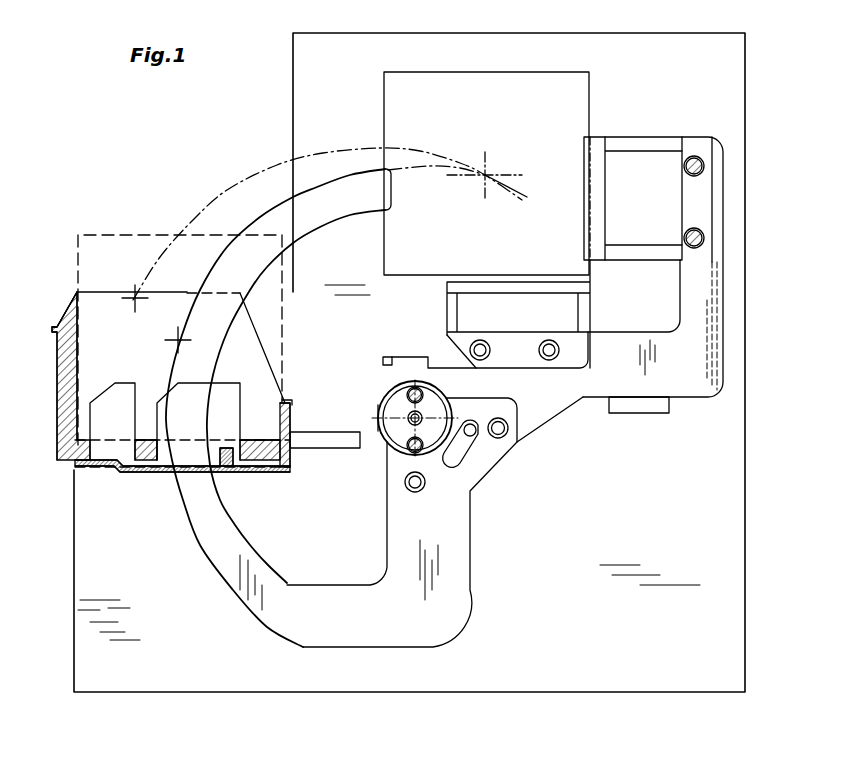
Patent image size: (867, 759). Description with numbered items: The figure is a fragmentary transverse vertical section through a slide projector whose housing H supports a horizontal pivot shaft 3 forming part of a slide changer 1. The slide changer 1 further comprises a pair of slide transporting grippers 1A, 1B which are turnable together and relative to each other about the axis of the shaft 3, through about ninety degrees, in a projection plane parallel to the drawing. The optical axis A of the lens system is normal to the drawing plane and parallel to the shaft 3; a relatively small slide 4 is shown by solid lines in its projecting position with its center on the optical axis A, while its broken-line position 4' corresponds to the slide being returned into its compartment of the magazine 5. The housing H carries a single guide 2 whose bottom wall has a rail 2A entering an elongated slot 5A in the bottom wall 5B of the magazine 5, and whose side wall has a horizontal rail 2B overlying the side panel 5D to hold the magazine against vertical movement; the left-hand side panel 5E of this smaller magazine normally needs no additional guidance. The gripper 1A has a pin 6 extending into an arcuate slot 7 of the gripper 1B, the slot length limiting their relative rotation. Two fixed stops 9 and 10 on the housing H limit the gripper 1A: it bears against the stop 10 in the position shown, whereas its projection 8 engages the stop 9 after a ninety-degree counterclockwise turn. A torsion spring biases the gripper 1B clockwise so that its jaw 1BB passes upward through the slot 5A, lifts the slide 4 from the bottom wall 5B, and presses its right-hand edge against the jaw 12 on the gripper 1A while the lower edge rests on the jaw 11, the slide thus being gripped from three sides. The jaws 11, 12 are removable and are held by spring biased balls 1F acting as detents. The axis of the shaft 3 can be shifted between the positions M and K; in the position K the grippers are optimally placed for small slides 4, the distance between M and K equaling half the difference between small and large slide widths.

The slide changer 1 is at (520, 442).
The gripper 1A is at (705, 373).
The gripper 1B is at (462, 559).
The slide-engaging jaw 1BB is at (390, 192).
The spring biased balls 1F is at (487, 345).
The guide 2 is at (97, 474).
The rail 2A is at (232, 460).
The rail 2B is at (290, 400).
The shaft 3 is at (410, 428).
The slide 4 is at (502, 165).
The broken-line position of slide 4' is at (182, 331).
The magazine 5 is at (54, 396).
The elongated slot 5A is at (230, 398).
The bottom wall 5B is at (147, 462).
The side panel 5D is at (289, 462).
The left-hand side panel 5E is at (72, 326).
The pin 6 is at (505, 436).
The arcuate slot 7 is at (462, 453).
The projection 8 is at (387, 357).
The stop 9 is at (340, 449).
The stop 10 is at (650, 414).
The slide supporting jaw 11 is at (581, 317).
The slide-engaging jaw 12 is at (585, 203).
The optical axis A is at (486, 174).
The shaft axis position K is at (420, 416).
The shaft axis position M is at (376, 411).
The housing H is at (748, 572).